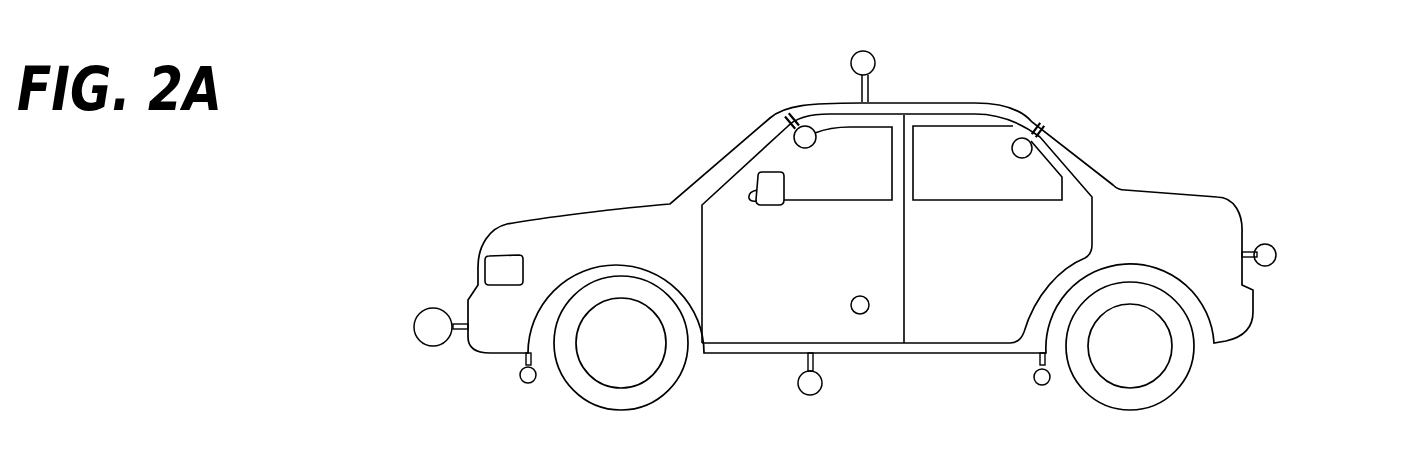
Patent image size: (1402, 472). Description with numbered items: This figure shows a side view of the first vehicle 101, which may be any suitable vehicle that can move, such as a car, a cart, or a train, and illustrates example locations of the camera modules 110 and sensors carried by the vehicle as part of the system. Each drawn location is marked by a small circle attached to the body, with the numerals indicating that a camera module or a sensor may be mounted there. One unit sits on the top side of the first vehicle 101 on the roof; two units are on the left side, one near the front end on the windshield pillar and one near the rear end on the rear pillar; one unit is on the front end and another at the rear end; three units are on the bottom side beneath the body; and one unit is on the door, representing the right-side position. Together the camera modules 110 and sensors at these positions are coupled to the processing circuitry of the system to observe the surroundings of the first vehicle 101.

The first vehicle 101 is at (1188, 139).
The camera modules 110 is at (888, 229).